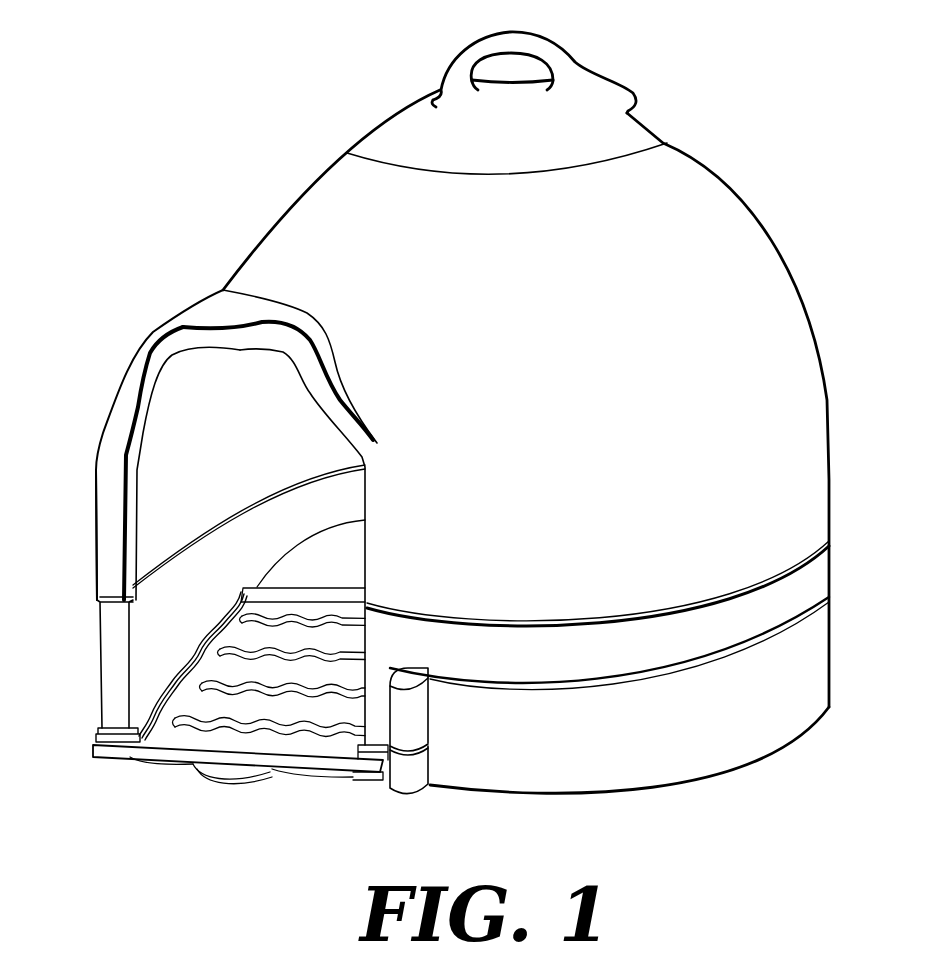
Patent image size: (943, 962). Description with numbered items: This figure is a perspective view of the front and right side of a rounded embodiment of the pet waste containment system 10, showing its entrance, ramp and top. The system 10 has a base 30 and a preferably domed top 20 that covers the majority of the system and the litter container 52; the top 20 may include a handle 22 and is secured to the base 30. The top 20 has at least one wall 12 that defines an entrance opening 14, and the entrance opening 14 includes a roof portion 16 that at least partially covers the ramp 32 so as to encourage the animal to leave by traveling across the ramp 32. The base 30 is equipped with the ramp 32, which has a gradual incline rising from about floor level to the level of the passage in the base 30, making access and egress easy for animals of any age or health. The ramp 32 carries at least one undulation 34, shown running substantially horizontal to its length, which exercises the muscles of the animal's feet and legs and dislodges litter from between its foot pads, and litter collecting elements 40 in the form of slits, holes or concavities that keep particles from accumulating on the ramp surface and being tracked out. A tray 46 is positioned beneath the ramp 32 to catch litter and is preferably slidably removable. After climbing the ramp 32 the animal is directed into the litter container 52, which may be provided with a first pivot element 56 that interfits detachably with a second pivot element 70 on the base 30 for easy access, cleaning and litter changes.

The waste containment system 10 is at (770, 191).
The wall 12 is at (107, 475).
The entrance opening 14 is at (177, 385).
The roof portion 16 is at (223, 312).
The top 20 is at (667, 177).
The handle 22 is at (547, 50).
The base 30 is at (90, 652).
The ramp 32 is at (93, 747).
The undulation 34 is at (222, 710).
The litter collecting elements 40 is at (337, 730).
The tray 46 is at (280, 772).
The litter container 52 is at (790, 677).
The pivot element 56 is at (413, 718).
The second pivot element 70 is at (415, 772).